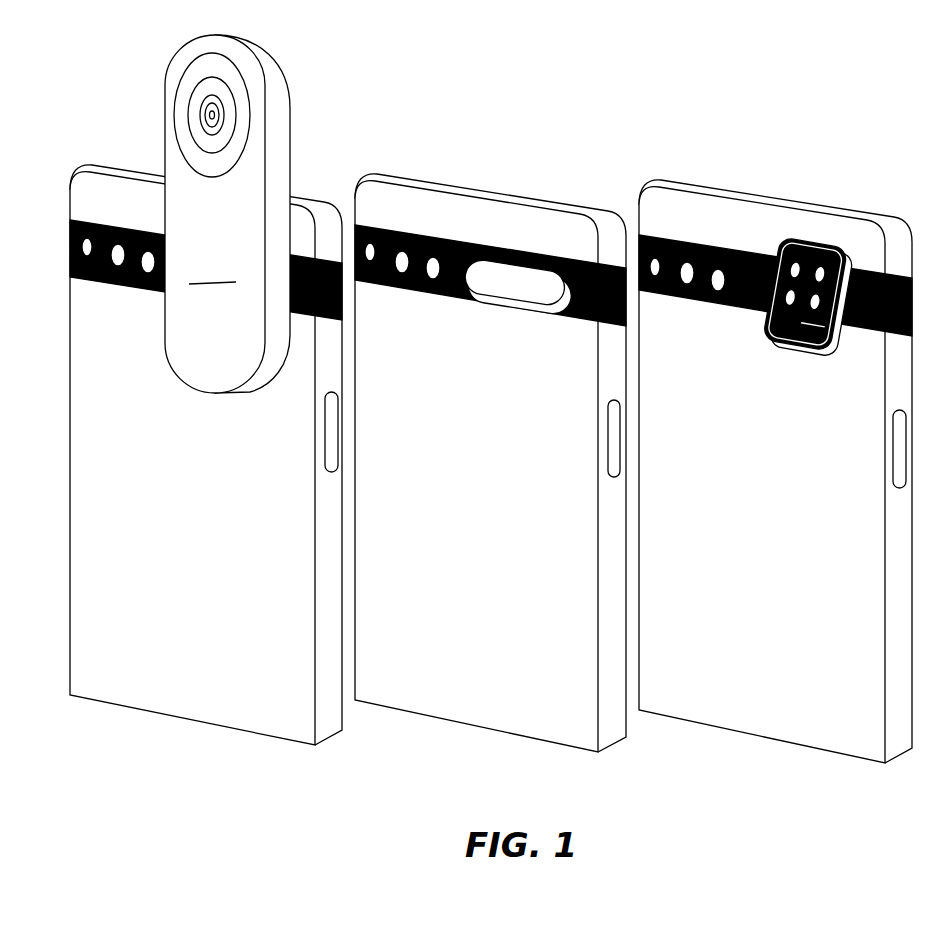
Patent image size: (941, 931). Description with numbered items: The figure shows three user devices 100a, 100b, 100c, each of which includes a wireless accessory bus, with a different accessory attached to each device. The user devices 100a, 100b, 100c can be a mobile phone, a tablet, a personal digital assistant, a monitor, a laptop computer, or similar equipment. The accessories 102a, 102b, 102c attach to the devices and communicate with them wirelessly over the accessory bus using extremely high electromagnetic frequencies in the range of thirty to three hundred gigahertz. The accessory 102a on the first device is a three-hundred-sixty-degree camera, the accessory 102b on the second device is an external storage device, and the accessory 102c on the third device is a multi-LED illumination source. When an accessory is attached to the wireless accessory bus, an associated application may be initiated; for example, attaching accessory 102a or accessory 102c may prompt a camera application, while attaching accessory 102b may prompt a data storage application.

The user device 100a is at (167, 493).
The user device 100b is at (460, 490).
The user device 100c is at (737, 490).
The accessory 102a is at (300, 152).
The accessory 102b is at (530, 250).
The accessory 102c is at (827, 230).